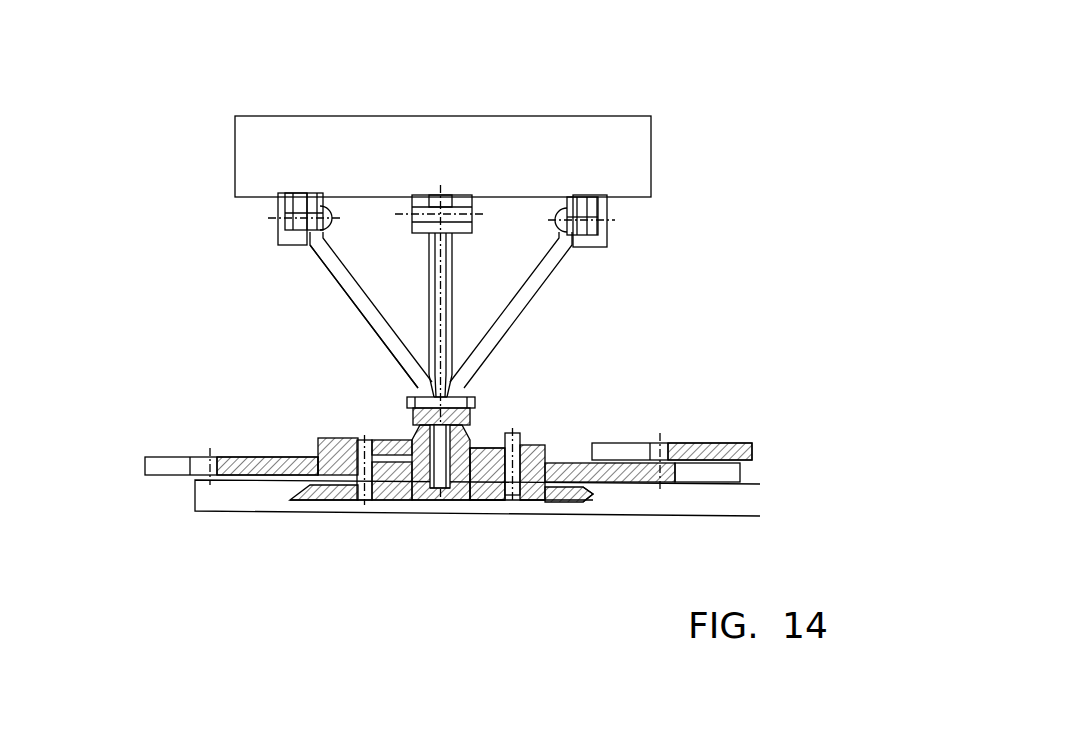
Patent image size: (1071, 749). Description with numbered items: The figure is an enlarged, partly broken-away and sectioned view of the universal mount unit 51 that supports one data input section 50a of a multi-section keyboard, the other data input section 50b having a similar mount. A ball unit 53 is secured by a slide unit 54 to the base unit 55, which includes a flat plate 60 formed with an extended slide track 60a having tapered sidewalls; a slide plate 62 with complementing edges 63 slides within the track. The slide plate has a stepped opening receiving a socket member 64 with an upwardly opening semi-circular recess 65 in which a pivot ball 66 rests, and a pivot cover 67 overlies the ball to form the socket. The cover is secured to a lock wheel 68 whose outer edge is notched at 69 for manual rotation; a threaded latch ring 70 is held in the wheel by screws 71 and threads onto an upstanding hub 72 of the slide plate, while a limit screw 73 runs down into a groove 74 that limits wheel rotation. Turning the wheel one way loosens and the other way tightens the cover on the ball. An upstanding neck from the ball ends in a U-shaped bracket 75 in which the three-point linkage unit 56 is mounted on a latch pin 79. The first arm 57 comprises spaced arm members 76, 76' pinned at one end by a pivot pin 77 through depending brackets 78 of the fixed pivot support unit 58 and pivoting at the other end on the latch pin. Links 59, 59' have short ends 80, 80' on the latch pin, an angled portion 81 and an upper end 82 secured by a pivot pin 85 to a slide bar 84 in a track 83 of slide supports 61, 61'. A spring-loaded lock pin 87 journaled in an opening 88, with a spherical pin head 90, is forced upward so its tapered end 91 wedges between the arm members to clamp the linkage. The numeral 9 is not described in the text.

The lever 9 is at (707, 419).
The data input section 50a is at (483, 145).
The data input section 50b is at (722, 440).
The universal mount unit 51 is at (557, 378).
The ball unit 53 is at (422, 502).
The slide unit 54 is at (305, 498).
The base unit 55 is at (192, 497).
The three-point linkage unit 56 is at (287, 335).
The first arm or link 57 is at (455, 283).
The pivot support unit 58 is at (412, 226).
The link 59 is at (301, 310).
The link 59' is at (582, 310).
The flat plate 60 is at (242, 497).
The slide track 60a is at (575, 513).
The slide support 61 is at (252, 226).
The slide support 61' is at (662, 207).
The slide plate 62 is at (545, 505).
The complementing edges 63 is at (582, 493).
The stepped opening / socket member 64 is at (467, 503).
The semi-circular recess 65 is at (458, 503).
The pivot ball 66 is at (410, 430).
The pivot cover 67 is at (487, 430).
The lock wheel 68 is at (225, 453).
The notched edge 69 is at (172, 453).
The threaded latch ring 70 is at (553, 440).
The threaded screws 71 is at (527, 433).
The hub 72 is at (490, 503).
The limit screw 73 is at (352, 436).
The groove 74 is at (520, 503).
The U-shaped bracket 75 is at (407, 383).
The arm member 76 is at (400, 315).
The arm member 76' is at (483, 315).
The pivot pin 77 is at (462, 192).
The depending bracket 78 is at (420, 192).
The latch pin 79 is at (393, 393).
The short end 80 is at (378, 352).
The short end 80' is at (536, 307).
The angled portion 81 is at (348, 287).
The upper end 82 is at (313, 190).
The track 83 is at (270, 207).
The slide bar 84 is at (293, 192).
The pivot pin 85 is at (330, 205).
The lock pin 87 is at (437, 500).
The opening 88 is at (410, 500).
The pin head 90 is at (446, 500).
The tapered lock end 91 is at (460, 386).